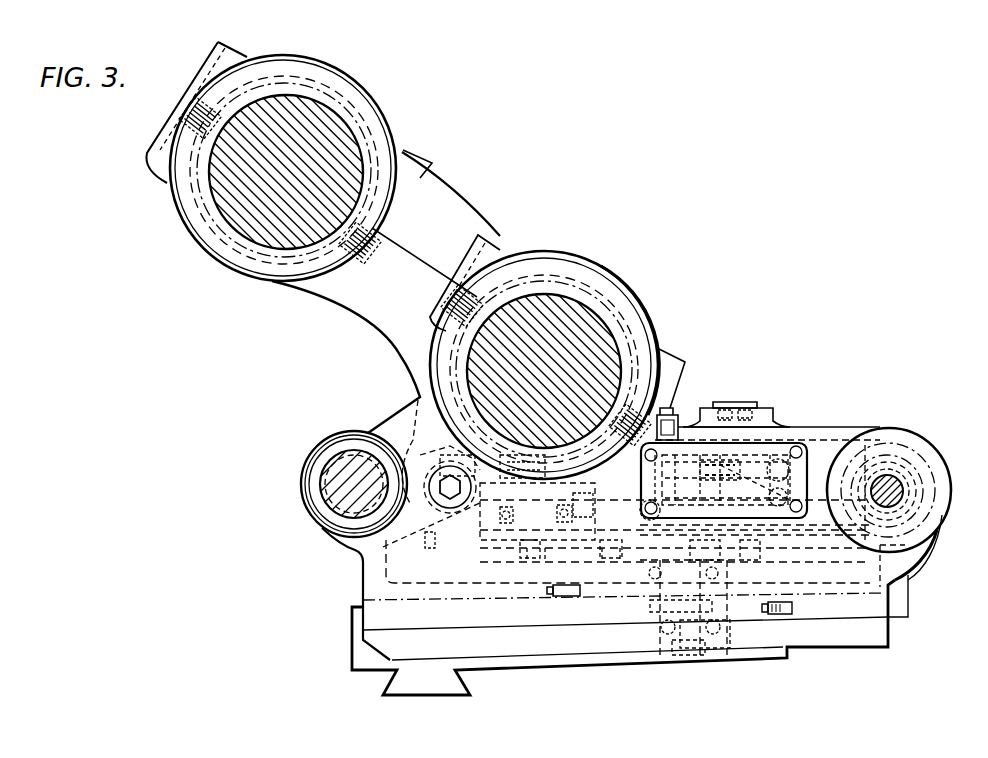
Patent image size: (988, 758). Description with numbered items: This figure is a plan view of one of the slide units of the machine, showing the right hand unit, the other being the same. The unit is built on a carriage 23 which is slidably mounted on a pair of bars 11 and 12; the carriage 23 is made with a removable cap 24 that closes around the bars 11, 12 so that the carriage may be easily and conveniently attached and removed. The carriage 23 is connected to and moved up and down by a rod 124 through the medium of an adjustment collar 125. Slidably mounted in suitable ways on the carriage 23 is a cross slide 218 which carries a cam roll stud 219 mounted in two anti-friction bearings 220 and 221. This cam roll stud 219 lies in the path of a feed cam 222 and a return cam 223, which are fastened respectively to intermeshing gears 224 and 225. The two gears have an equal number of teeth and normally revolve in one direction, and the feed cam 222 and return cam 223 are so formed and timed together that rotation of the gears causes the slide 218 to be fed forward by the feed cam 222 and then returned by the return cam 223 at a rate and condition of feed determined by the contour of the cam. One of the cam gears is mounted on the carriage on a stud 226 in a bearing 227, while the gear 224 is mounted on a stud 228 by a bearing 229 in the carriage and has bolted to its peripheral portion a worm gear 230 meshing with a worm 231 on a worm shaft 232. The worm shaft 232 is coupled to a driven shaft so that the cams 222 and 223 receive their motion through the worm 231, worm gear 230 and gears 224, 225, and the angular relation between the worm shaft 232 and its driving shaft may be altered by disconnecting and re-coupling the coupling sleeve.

The bar 11 is at (582, 348).
The bar 12 is at (305, 110).
The carriage 23 is at (370, 323).
The removable cap 24 is at (423, 205).
The rod 124 is at (343, 482).
The adjustment collar 125 is at (322, 464).
The cross slide 218 is at (351, 663).
The cam roll stud 219 is at (712, 660).
The anti-friction bearing 220 is at (648, 578).
The anti-friction bearing 221 is at (660, 636).
The feed cam 222 is at (910, 567).
The return cam 223 is at (466, 565).
The gear 224 is at (936, 540).
The gear 225 is at (430, 506).
The stud 226 is at (655, 497).
The bearing 227 is at (490, 531).
The stud 228 is at (737, 404).
The bearing 229 is at (773, 478).
The worm gear 230 is at (868, 447).
The worm 231 is at (895, 453).
The worm shaft 232 is at (896, 478).